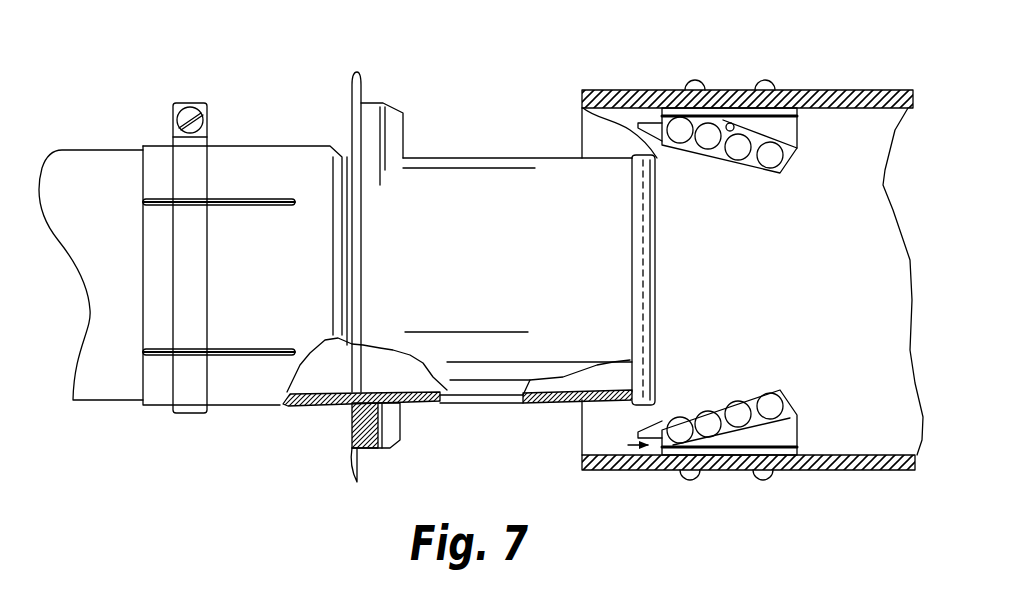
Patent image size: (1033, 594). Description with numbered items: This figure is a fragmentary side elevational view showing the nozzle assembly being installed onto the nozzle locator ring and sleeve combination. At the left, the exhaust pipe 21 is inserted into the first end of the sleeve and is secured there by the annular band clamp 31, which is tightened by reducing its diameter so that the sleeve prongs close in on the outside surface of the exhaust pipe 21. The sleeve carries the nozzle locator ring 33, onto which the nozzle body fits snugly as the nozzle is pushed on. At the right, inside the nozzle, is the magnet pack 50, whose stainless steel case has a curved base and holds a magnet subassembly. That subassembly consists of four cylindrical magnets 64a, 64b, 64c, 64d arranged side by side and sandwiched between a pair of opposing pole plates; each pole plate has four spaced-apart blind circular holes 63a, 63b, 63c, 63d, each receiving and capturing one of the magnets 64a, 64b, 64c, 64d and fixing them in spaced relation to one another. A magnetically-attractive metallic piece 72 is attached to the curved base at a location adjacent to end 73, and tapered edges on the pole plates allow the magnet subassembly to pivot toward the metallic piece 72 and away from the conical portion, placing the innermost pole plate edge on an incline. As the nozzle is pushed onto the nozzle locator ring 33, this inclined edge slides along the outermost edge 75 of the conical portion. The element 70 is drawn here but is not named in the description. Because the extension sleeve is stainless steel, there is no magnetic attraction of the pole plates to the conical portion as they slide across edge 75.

The exhaust pipe 21 is at (95, 190).
The annular band clamp 31 is at (195, 182).
The nozzle locator ring 33 is at (372, 122).
The magnet pack 50 is at (750, 129).
The blind circular hole 63a is at (693, 106).
The blind circular hole 63b is at (705, 120).
The blind circular hole 63c is at (745, 135).
The blind circular hole 63d is at (787, 152).
The cylindrical magnet 64a is at (685, 416).
The cylindrical magnet 64b is at (708, 410).
The cylindrical magnet 64c is at (740, 400).
The cylindrical magnet 64d is at (785, 394).
The pin 70 is at (728, 131).
The magnetically-attractive metallic piece 72 is at (635, 90).
The end 73 is at (627, 471).
The outermost edge 75 is at (583, 108).